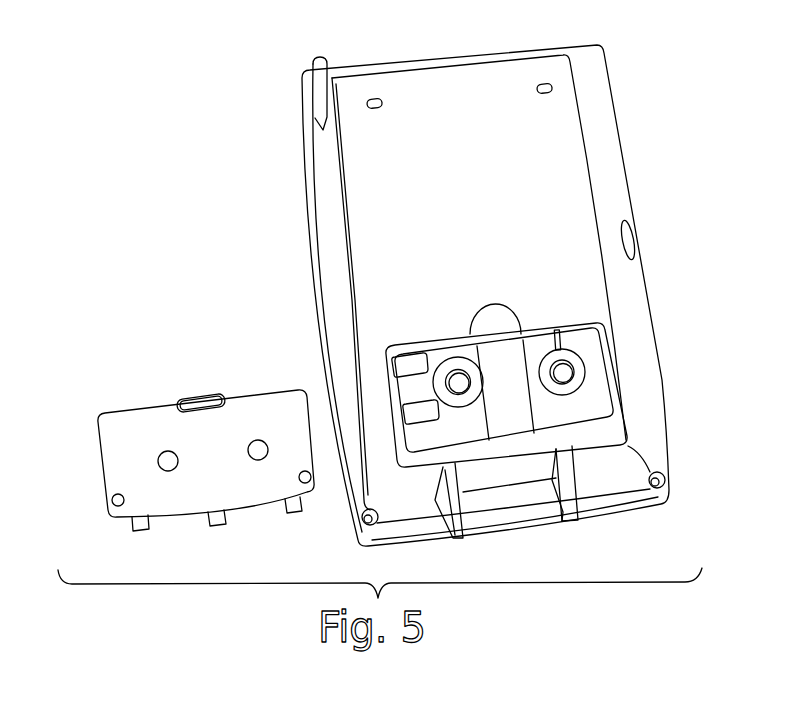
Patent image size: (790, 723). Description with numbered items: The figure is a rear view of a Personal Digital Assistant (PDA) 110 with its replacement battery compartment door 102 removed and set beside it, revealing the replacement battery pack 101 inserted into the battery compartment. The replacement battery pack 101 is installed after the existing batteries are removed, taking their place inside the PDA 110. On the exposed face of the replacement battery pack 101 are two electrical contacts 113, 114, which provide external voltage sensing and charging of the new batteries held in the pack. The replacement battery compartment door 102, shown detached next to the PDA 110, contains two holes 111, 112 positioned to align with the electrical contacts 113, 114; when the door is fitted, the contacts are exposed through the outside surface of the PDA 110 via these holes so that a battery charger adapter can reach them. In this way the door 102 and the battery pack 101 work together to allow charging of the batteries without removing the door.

The Personal Digital Assistant (PDA) 110 is at (407, 60).
The replacement battery pack 101 is at (513, 425).
The electrical contact 113 is at (457, 378).
The electrical contact 114 is at (562, 370).
The replacement battery compartment door 102 is at (116, 465).
The hole 111 is at (167, 451).
The hole 112 is at (258, 440).